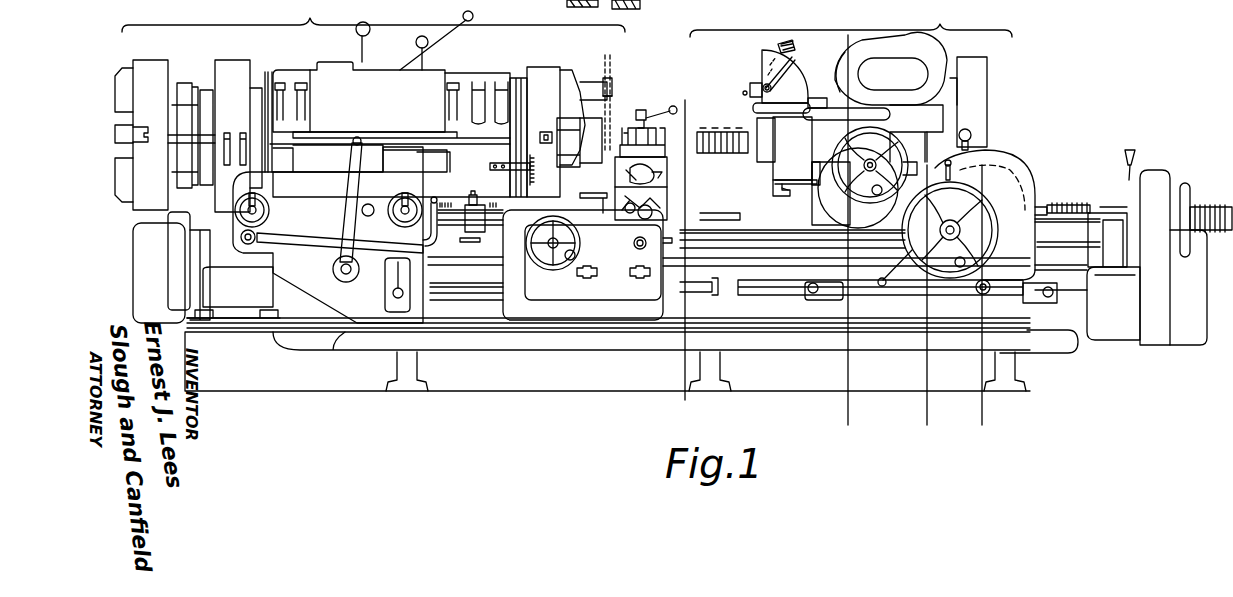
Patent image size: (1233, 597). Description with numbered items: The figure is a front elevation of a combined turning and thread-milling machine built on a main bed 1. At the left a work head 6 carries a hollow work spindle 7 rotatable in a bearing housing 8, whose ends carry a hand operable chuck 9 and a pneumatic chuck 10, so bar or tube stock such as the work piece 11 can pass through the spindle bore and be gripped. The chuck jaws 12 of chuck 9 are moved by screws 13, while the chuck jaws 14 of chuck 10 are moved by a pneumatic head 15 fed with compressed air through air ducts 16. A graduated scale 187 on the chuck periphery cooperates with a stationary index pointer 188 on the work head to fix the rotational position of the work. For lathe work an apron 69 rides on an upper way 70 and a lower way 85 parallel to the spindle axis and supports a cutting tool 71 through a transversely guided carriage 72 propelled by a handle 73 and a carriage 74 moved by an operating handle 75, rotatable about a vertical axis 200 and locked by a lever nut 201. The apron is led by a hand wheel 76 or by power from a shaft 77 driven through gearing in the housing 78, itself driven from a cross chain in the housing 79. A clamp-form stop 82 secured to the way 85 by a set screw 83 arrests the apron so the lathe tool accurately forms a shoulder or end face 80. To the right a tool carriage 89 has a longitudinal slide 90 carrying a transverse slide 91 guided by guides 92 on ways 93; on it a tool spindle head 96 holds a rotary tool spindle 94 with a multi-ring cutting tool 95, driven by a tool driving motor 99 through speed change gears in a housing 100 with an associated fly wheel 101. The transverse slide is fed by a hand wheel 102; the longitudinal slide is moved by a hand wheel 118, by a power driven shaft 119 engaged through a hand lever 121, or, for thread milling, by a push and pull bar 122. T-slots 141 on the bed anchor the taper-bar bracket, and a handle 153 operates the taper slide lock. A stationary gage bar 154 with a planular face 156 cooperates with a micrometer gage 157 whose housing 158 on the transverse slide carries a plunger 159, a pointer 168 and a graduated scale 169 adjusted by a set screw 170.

The main bed 1 is at (625, 385).
The work head 6 is at (698, 110).
The hollow work spindle 7 is at (266, 72).
The bearing housing 8 is at (467, 75).
The hand operable work gripping chuck 9 is at (542, 70).
The pneumatic work gripping chuck 10 is at (147, 68).
The work piece 11 is at (572, 120).
The chuck jaws 12 is at (565, 80).
The screws 13 is at (544, 134).
The chuck jaws 14 is at (125, 80).
The pneumatic head 15 is at (229, 68).
The air ducts 16 is at (242, 132).
The apron 69 is at (600, 325).
The upper way 70 is at (690, 298).
The cutting tool 71 is at (620, 148).
The transversely guided carriage 72 is at (666, 197).
The handle 73 is at (648, 213).
The carriage 74 is at (666, 172).
The operating handle 75 is at (670, 179).
The hand wheel 76 is at (545, 268).
The shaft 77 is at (697, 288).
The housing 78 is at (335, 230).
The housing 79 is at (132, 302).
The shoulder or end face 80 is at (600, 160).
The stop 82 is at (477, 232).
The set screw 83 is at (476, 190).
The lower way 85 is at (456, 205).
The tool carriage 89 is at (851, 23).
The longitudinal slide 90 is at (778, 197).
The transverse slide 91 is at (778, 178).
The guides 92 is at (784, 188).
The ways 93 is at (785, 176).
The rotary tool spindle 94 is at (760, 126).
The tool 95 is at (724, 152).
The tool spindle head 96 is at (821, 139).
The tool driving motor 99 is at (848, 60).
The housing 100 is at (893, 74).
The fly wheel 101 is at (987, 104).
The hand wheel 102 is at (842, 152).
The hand wheel 118 is at (950, 280).
The power driven shaft 119 is at (775, 270).
The hand lever 121 is at (998, 298).
The push and pull bar 122 is at (1050, 205).
The T-slots 141 is at (597, 0).
The handle 153 is at (972, 133).
The gage bar 154 is at (610, 76).
The planular face 156 is at (610, 92).
The micrometer gage 157 is at (764, 65).
The main housing 158 is at (800, 80).
The plunger 159 is at (744, 92).
The pointer 168 is at (781, 95).
The graduated scale 169 is at (795, 52).
The set screw 170 is at (778, 45).
The graduated scale 187 is at (500, 176).
The index pointer 188 is at (492, 163).
The vertical axis 200 is at (641, 110).
The lever nut 201 is at (661, 104).